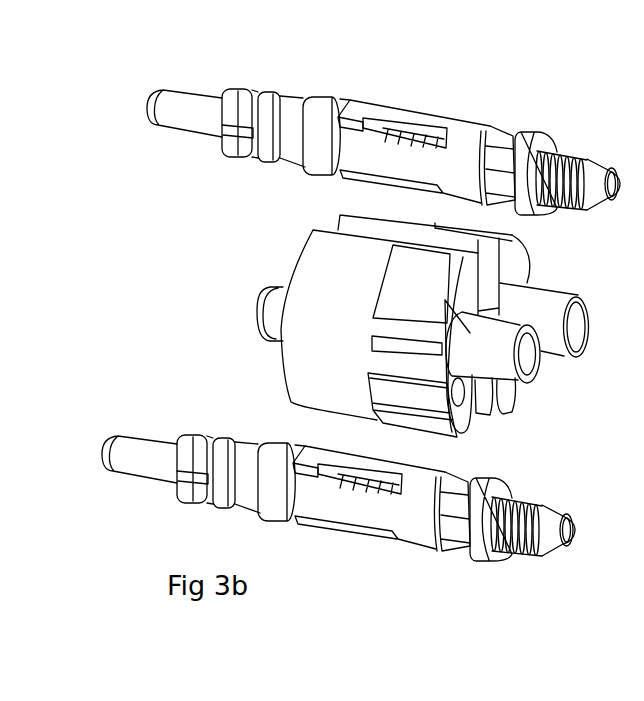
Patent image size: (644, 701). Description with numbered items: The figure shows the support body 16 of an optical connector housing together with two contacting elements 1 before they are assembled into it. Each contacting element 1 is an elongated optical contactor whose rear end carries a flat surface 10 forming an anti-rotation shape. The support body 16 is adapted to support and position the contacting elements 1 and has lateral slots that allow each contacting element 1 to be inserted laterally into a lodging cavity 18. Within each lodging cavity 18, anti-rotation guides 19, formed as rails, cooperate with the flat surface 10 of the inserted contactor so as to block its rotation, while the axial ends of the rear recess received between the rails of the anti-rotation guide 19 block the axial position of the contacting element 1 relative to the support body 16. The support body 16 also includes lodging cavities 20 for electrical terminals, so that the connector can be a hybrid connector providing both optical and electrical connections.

The contacting element 1 is at (361, 314).
The flat surface 10 is at (475, 120).
The support body 16 is at (322, 367).
The lodging cavity 18 is at (367, 228).
The anti-rotation guide 19 is at (488, 266).
The lodging cavity for electrical terminal 20 is at (530, 352).